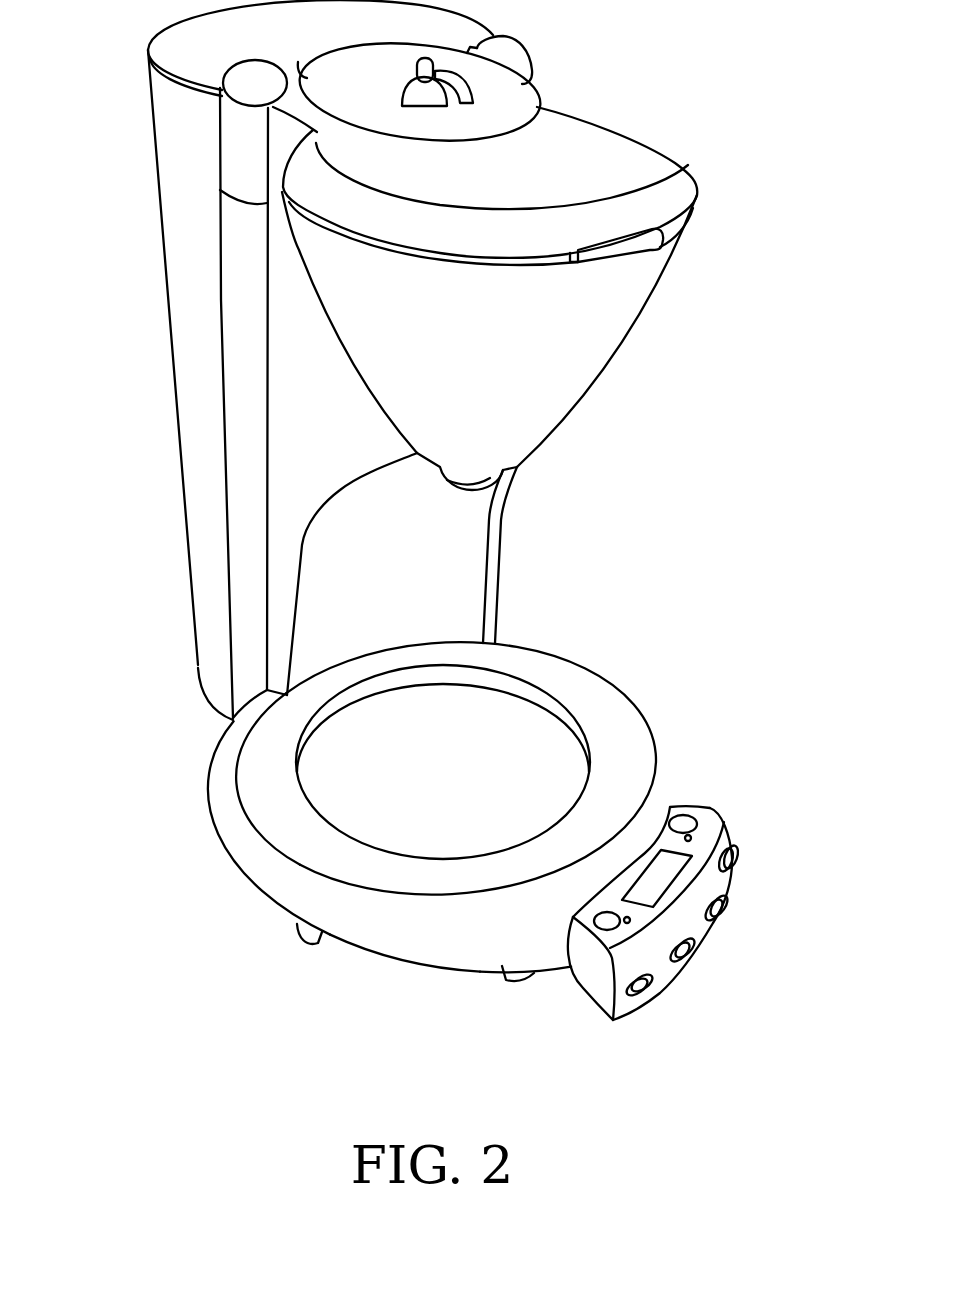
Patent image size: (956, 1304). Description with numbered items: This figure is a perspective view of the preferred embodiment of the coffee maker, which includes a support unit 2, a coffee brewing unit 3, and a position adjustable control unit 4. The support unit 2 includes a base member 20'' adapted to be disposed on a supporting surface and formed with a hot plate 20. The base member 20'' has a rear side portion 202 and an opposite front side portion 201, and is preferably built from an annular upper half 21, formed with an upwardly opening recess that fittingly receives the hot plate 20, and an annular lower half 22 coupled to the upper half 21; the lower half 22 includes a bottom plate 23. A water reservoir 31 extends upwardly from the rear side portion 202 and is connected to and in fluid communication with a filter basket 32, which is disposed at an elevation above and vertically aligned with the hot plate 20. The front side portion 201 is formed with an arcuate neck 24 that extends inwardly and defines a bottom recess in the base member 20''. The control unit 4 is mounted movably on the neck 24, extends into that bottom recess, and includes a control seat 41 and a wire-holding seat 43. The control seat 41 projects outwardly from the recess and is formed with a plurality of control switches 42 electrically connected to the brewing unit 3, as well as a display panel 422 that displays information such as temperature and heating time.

The support unit 2 is at (473, 823).
The hot plate 20 is at (358, 762).
The base member 20'' is at (481, 717).
The front side portion 201 is at (507, 927).
The rear side portion 202 is at (238, 722).
The annular upper half 21 is at (238, 830).
The annular lower half 22 is at (290, 917).
The bottom plate 23 is at (297, 940).
The neck 24 is at (393, 953).
The coffee brewing unit 3 is at (412, 359).
The water reservoir 31 is at (180, 200).
The filter basket 32 is at (647, 277).
The position adjustable control unit 4 is at (660, 933).
The control seat 41 is at (592, 1000).
The control switches 42 is at (723, 913).
The display panel 422 is at (663, 883).
The wire-holding seat 43 is at (533, 970).